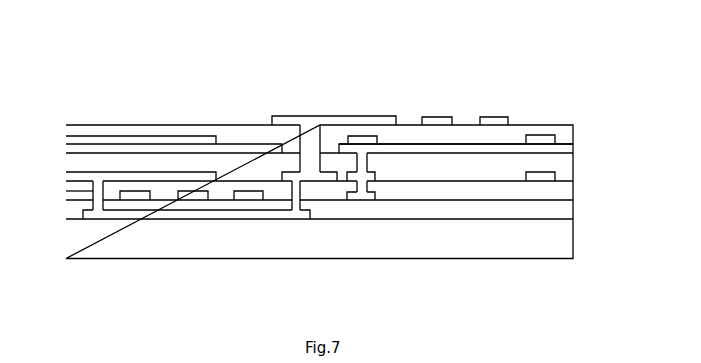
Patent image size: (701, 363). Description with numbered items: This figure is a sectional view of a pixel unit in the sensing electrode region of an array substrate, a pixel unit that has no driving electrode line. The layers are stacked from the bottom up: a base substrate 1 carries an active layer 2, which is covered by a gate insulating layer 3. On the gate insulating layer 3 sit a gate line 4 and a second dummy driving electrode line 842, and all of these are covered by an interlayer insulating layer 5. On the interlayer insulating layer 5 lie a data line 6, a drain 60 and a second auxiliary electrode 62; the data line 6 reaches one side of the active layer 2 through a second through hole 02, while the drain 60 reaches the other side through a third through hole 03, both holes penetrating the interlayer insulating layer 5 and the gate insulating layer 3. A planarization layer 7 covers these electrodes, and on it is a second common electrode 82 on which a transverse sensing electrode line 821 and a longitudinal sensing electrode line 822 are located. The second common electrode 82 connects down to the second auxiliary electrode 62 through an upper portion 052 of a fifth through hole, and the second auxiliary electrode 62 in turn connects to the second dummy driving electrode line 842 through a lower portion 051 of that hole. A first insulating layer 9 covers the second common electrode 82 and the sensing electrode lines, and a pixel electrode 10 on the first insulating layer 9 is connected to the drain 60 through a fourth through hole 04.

The base substrate 1 is at (573, 238).
The active layer 2 is at (174, 219).
The gate insulating layer 3 is at (573, 210).
The gate line 4 is at (255, 200).
The interlayer insulating layer 5 is at (573, 190).
The data line 6 is at (535, 181).
The planarization layer 7 is at (573, 162).
The first insulating layer 9 is at (575, 131).
The pixel electrode 10 is at (367, 117).
The second through hole 02 is at (93, 191).
The third through hole 03 is at (300, 187).
The fourth through hole 04 is at (310, 135).
The lower portion of the fifth through hole 051 is at (363, 186).
The upper portion of the fifth through hole 052 is at (363, 155).
The drain 60 is at (282, 172).
The second auxiliary electrode 62 is at (347, 181).
The second common electrode 82 is at (452, 144).
The transverse sensing electrode line 821 is at (363, 136).
The longitudinal sensing electrode line 822 is at (545, 135).
The second dummy driving electrode line 842 is at (132, 200).